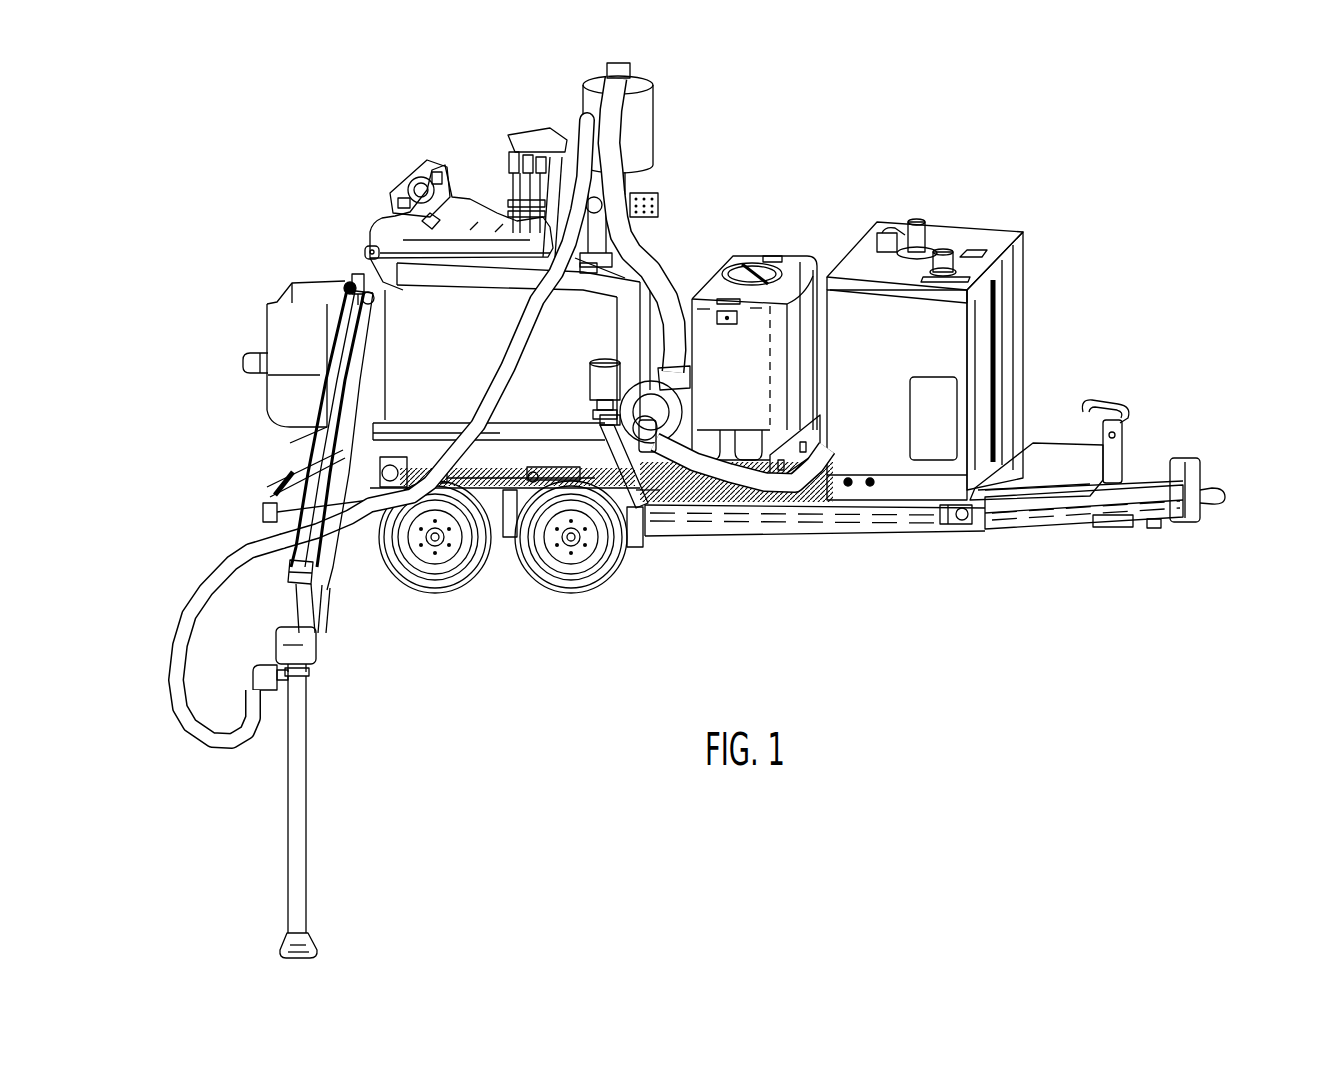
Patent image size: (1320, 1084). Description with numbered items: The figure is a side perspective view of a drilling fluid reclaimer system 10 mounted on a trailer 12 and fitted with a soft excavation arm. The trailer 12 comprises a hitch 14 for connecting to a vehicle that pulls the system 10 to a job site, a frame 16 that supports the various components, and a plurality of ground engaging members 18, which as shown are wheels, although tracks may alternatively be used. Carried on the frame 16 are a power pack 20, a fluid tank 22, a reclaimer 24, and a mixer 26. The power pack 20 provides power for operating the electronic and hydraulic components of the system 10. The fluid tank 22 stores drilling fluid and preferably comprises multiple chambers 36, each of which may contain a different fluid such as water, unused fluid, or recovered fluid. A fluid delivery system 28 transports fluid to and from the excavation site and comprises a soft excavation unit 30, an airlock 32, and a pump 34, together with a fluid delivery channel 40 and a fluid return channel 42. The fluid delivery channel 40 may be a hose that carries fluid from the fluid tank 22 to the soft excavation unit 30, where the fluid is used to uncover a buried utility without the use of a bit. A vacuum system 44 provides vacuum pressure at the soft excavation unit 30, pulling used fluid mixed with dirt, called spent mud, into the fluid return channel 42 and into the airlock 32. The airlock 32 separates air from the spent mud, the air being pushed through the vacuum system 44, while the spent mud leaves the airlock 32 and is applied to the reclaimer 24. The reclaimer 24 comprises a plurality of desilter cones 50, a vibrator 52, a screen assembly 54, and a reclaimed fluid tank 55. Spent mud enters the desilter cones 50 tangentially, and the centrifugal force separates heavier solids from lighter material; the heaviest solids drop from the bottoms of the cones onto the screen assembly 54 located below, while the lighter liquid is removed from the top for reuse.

The drilling fluid reclaimer system 10 is at (703, 497).
The trailer 12 is at (723, 523).
The hitch 14 is at (1175, 457).
The frame 16 is at (559, 565).
The ground engaging members 18 is at (444, 568).
The power pack 20 is at (952, 339).
The fluid tank 22 is at (782, 337).
The reclaimer 24 is at (457, 284).
The mixer 26 is at (267, 362).
The fluid delivery system 28 is at (486, 288).
The soft excavation unit 30 is at (339, 817).
The airlock 32 is at (658, 145).
The pump 34 is at (730, 506).
The chambers 36 is at (772, 224).
The fluid delivery channel 40 is at (348, 479).
The fluid return channel 42 is at (213, 636).
The vacuum system 44 is at (672, 522).
The desilter cones 50 is at (478, 180).
The vibrator 52 is at (376, 173).
The screen assembly 54 is at (311, 226).
The reclaimed fluid tank 55 is at (293, 266).